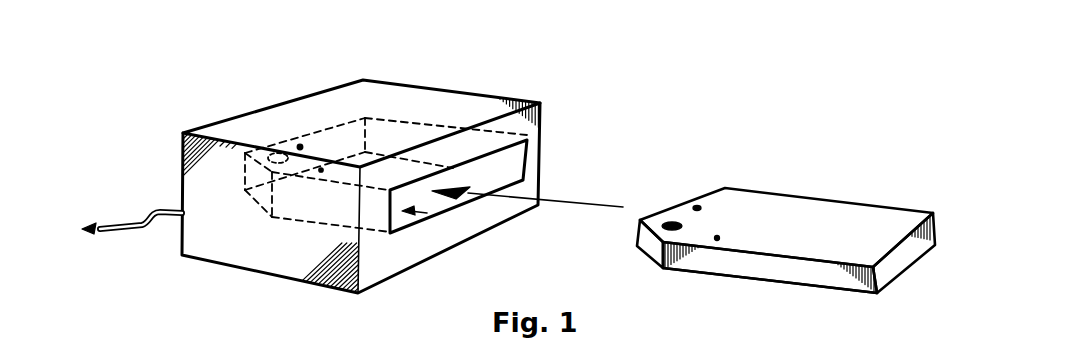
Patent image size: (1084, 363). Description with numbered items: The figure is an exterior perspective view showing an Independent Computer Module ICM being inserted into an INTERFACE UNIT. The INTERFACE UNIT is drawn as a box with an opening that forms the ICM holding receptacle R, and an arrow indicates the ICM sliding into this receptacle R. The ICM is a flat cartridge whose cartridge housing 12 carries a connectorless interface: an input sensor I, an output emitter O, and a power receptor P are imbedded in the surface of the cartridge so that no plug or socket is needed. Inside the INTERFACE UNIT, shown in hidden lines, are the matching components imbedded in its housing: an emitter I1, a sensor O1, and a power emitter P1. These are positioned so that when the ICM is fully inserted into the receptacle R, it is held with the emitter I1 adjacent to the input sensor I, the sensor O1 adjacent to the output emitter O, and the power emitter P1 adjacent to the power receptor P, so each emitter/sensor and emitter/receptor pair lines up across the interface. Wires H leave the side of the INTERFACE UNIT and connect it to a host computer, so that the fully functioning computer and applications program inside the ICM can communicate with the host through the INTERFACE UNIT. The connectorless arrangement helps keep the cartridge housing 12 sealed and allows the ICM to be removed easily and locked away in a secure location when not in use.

The interface unit INTERFACE UNIT is at (388, 97).
The ICM holding receptacle R is at (428, 214).
The power emitter P1 is at (275, 150).
The emitter I1 is at (302, 146).
The sensor O1 is at (321, 173).
The wires H is at (119, 226).
The independent computer module ICM is at (823, 214).
The cartridge housing 12 is at (753, 276).
The input sensor I is at (703, 203).
The power receptor P is at (684, 226).
The output emitter O is at (722, 238).